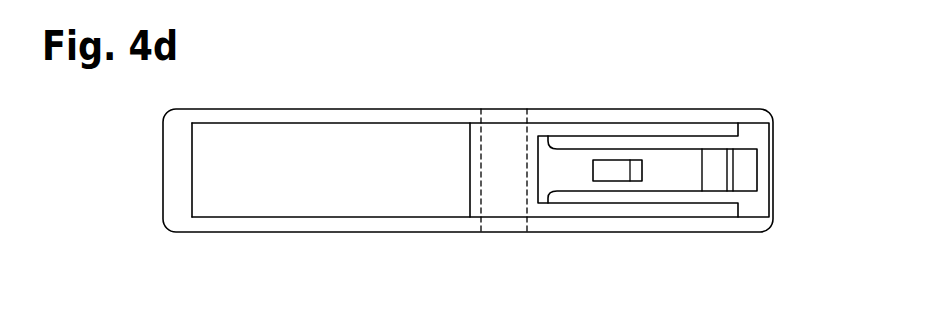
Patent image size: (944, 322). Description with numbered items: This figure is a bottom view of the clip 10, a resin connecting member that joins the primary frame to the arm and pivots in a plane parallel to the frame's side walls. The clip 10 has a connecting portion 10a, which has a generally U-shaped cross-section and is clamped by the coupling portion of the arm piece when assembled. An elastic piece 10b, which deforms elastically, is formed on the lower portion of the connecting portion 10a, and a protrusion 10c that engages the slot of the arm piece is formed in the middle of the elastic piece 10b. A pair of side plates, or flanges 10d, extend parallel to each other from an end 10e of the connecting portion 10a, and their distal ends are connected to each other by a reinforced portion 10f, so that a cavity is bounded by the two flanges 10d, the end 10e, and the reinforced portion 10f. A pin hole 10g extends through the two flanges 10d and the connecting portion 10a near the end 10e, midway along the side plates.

The clip 10 is at (707, 82).
The connecting portion 10a is at (505, 208).
The elastic piece 10b is at (688, 185).
The protrusion 10c is at (637, 182).
The flanges 10d is at (350, 115).
The end of the connecting portion 10e is at (470, 203).
The reinforced portion 10f is at (188, 170).
The pin hole 10g is at (484, 129).